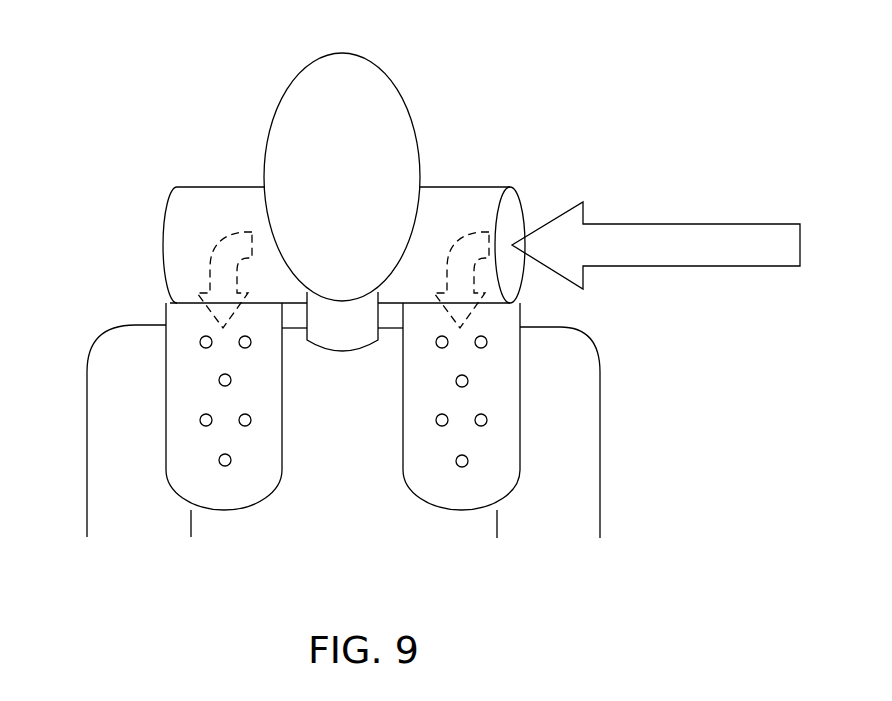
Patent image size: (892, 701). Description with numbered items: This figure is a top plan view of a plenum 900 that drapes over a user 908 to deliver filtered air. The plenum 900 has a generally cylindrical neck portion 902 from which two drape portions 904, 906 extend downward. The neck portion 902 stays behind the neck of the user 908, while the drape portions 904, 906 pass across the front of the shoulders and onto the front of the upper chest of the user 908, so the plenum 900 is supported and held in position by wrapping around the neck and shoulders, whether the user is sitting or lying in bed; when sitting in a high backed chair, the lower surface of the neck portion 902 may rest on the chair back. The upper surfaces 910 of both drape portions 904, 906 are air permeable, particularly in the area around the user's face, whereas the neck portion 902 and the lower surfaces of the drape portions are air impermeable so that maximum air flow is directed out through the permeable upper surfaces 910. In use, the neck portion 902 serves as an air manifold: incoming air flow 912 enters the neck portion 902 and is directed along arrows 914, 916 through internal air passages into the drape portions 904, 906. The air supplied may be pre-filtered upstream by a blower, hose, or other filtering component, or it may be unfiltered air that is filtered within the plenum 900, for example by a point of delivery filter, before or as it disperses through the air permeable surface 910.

The plenum 900 is at (138, 229).
The neck portion 902 is at (488, 208).
The drape portion 904 is at (252, 483).
The drape portion 906 is at (527, 437).
The user 908 is at (356, 90).
The upper surface 910 is at (486, 398).
The incoming air flow 912 is at (743, 224).
The arrow 914 is at (468, 238).
The arrow 916 is at (227, 242).